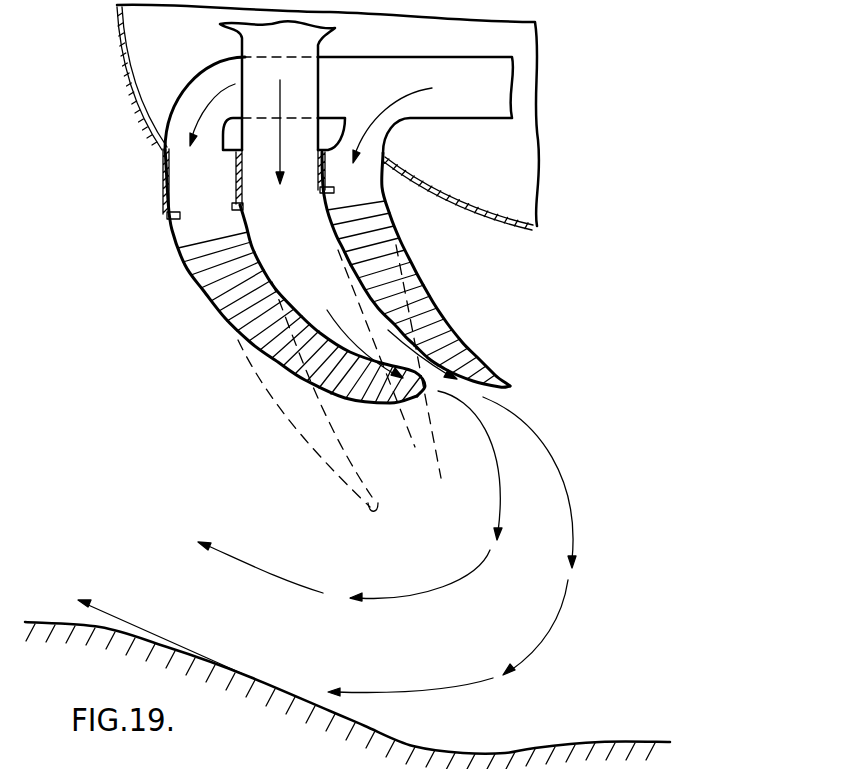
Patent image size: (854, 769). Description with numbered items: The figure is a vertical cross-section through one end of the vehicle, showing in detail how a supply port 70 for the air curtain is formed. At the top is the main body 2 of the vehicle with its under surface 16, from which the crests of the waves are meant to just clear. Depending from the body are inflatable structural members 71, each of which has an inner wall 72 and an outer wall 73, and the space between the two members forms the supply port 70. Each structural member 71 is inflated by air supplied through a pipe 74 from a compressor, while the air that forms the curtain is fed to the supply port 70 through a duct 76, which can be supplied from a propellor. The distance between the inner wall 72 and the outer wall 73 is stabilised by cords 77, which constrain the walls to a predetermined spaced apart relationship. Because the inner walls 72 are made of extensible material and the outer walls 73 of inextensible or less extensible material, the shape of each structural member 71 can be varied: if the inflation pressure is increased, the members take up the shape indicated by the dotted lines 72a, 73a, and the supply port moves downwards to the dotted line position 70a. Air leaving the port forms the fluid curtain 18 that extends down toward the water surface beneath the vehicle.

The main body 2 is at (117, 33).
The under surface 16 is at (533, 227).
The fluid curtain 18 is at (347, 695).
The supply port 70 is at (447, 384).
The dotted line position of supply port 70a is at (409, 488).
The inflatable structural member 71 is at (420, 290).
The inner wall 72 is at (447, 320).
The dotted line of inner wall 72a is at (454, 476).
The outer wall 73 is at (362, 289).
The dotted line of outer wall 73a is at (418, 430).
The pipe 74 is at (494, 110).
The duct 76 is at (333, 42).
The cords 77 is at (468, 349).